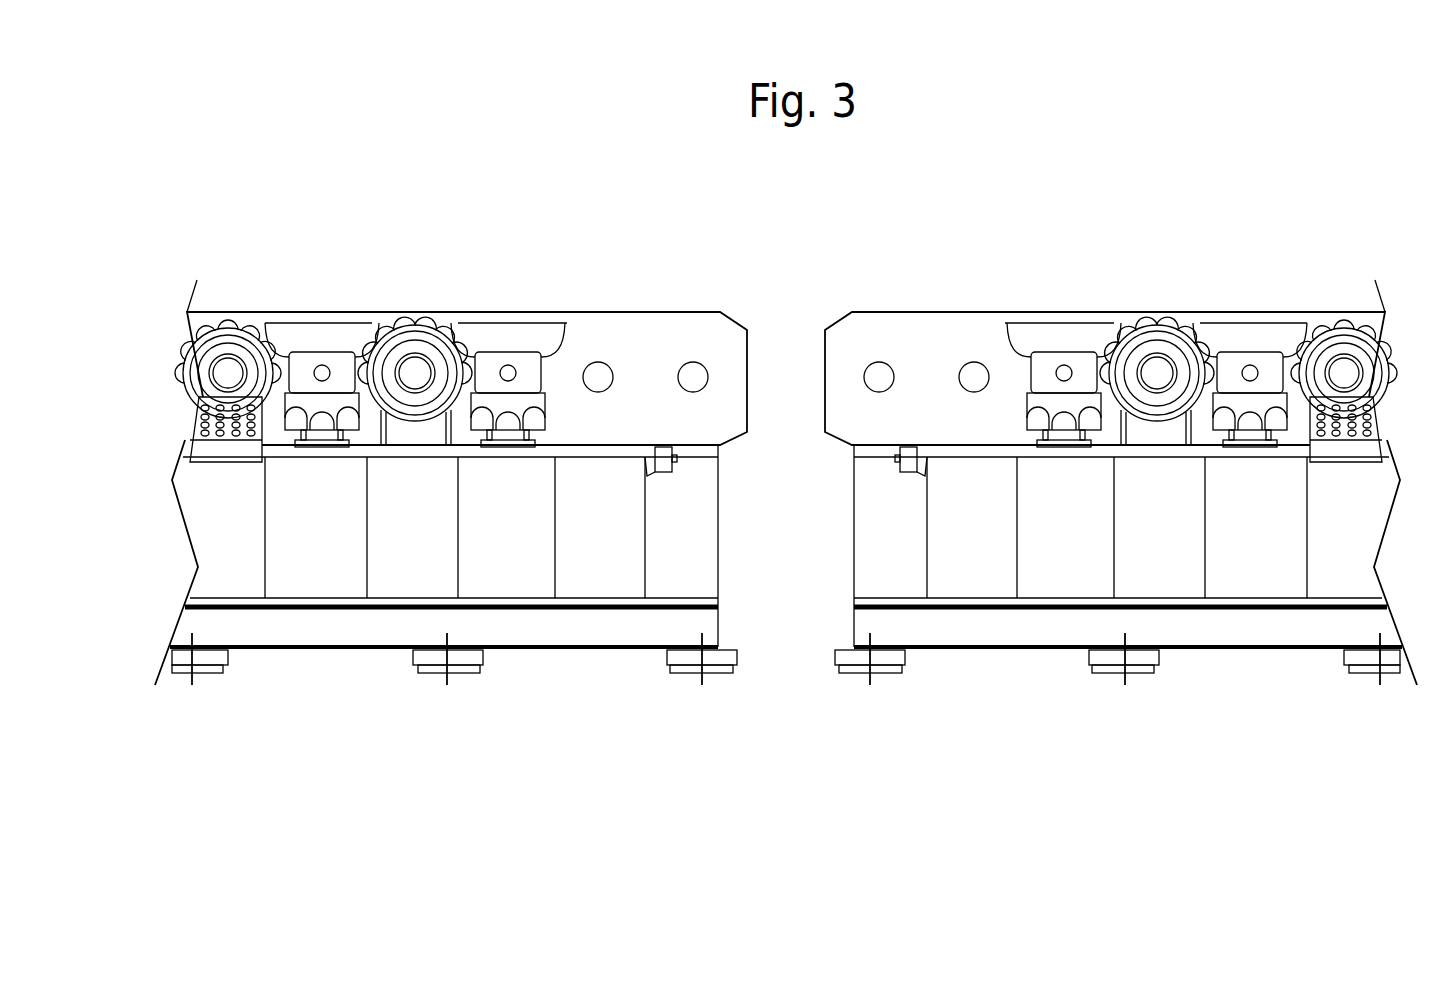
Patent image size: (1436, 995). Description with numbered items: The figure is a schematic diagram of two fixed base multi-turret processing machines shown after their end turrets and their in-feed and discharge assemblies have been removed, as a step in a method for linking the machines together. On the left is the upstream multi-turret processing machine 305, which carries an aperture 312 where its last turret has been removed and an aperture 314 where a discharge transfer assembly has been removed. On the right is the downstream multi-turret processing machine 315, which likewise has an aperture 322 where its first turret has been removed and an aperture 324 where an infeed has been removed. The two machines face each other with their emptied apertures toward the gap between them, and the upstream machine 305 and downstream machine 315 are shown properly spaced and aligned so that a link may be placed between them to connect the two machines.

The upstream multi-turret processing machine 305 is at (426, 250).
The aperture 312 is at (597, 362).
The aperture 314 is at (688, 363).
The downstream multi-turret processing machine 315 is at (1185, 250).
The aperture 322 is at (973, 363).
The aperture 324 is at (879, 363).